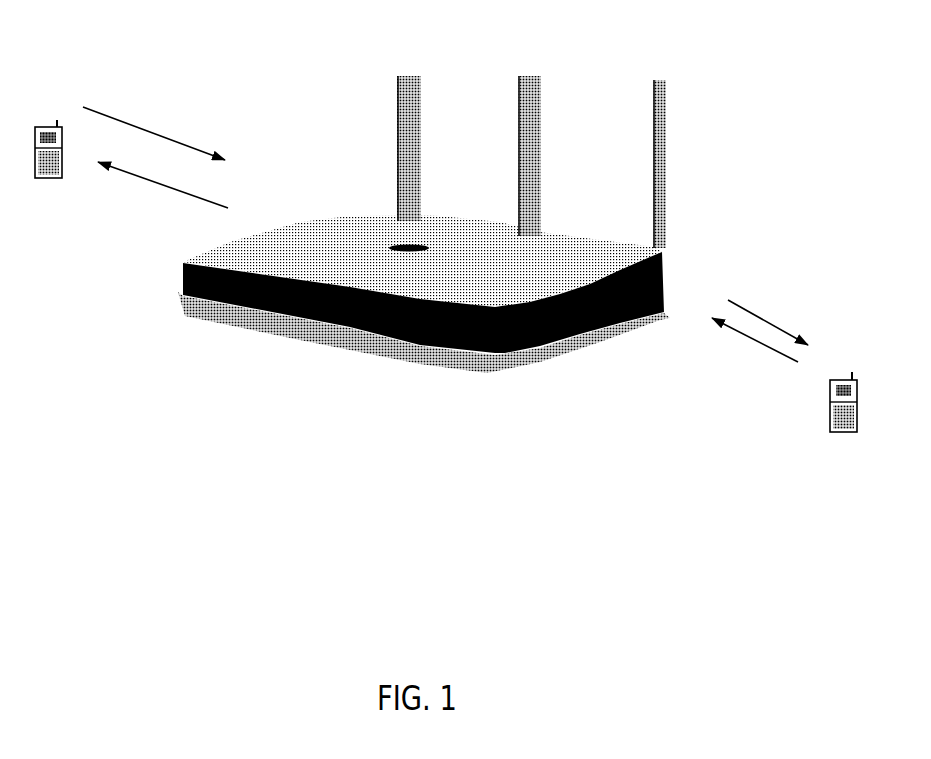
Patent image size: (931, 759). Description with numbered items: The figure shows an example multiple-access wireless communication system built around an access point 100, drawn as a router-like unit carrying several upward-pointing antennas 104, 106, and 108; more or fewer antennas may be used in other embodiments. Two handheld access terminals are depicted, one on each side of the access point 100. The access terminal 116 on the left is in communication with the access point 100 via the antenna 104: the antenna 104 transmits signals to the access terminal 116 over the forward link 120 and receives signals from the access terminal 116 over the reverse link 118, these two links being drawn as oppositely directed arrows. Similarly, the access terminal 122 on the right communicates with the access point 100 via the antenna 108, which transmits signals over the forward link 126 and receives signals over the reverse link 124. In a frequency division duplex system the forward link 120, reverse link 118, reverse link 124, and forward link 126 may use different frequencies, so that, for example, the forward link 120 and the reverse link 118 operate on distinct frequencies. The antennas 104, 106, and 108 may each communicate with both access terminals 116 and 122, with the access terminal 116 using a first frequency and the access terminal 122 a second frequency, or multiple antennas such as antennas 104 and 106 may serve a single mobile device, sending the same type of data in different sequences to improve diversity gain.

The access point 100 is at (295, 110).
The antenna 104 is at (403, 76).
The antenna 106 is at (528, 77).
The antenna 108 is at (667, 80).
The access terminal 116 is at (48, 126).
The reverse link 118 is at (182, 137).
The forward link 120 is at (142, 182).
The access terminal 122 is at (848, 372).
The reverse link 124 is at (742, 335).
The forward link 126 is at (772, 325).